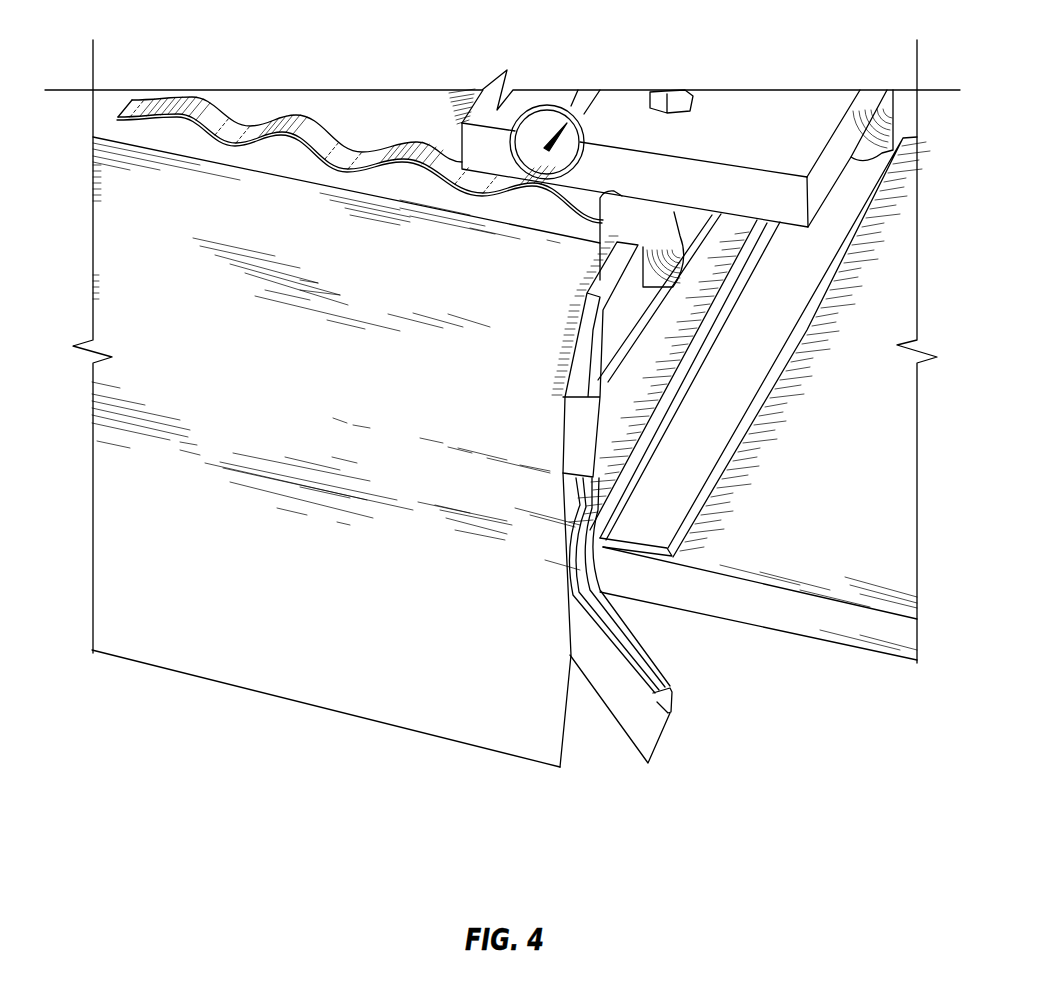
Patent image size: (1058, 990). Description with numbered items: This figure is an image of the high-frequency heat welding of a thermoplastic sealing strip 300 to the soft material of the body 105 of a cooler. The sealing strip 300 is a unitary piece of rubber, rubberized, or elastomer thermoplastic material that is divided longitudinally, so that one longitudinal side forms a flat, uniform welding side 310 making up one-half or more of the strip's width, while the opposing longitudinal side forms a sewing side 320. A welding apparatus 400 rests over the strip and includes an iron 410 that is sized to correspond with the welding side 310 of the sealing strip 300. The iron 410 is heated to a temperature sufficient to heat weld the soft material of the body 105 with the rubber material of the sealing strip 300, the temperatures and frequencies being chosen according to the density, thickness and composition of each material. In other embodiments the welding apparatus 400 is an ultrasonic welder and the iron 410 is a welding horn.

The body 105 is at (273, 380).
The welding apparatus 400 is at (777, 136).
The iron 410 is at (636, 377).
The sealing strip 300 is at (655, 663).
The sewing side 320 is at (660, 680).
The welding side 310 is at (620, 700).